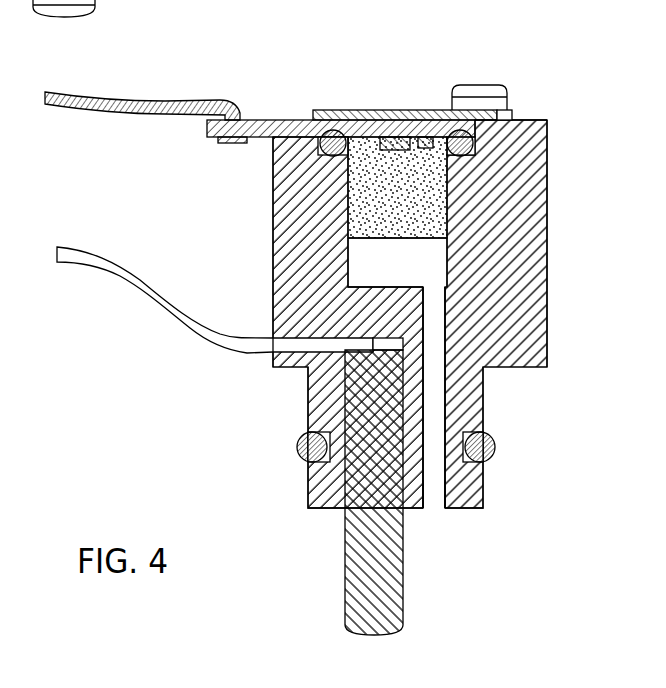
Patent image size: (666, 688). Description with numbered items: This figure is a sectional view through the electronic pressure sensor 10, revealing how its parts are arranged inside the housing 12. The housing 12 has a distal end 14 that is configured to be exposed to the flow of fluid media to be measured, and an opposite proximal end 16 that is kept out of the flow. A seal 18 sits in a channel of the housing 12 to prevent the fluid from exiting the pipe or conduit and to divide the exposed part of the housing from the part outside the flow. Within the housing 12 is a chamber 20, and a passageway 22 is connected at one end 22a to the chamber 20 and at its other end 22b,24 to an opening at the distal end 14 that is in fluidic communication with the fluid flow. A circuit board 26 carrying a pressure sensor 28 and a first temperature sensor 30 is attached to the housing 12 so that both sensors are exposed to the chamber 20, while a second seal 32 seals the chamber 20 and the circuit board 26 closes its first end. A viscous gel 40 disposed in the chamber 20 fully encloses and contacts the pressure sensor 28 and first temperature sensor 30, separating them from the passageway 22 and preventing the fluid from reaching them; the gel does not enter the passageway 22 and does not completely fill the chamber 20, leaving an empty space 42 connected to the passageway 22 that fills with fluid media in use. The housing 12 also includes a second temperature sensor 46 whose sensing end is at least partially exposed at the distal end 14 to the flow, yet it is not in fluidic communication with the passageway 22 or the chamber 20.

The electronic pressure sensor 10 is at (579, 58).
The housing 12 is at (548, 203).
The distal end 14 is at (467, 510).
The proximal end 16 is at (548, 120).
The seal 18 is at (495, 437).
The chamber 20 is at (403, 262).
The passageway 22 is at (435, 362).
The passageway end 22a is at (435, 303).
The passageway other end and opening 22b,24 is at (430, 510).
The circuit board 26 is at (265, 118).
The pressure sensor 28 is at (395, 137).
The first temperature sensor 30 is at (427, 142).
The second seal 32 is at (334, 136).
The viscous gel 40 is at (357, 203).
The empty space 42 is at (365, 266).
The second temperature sensor 46 is at (347, 562).